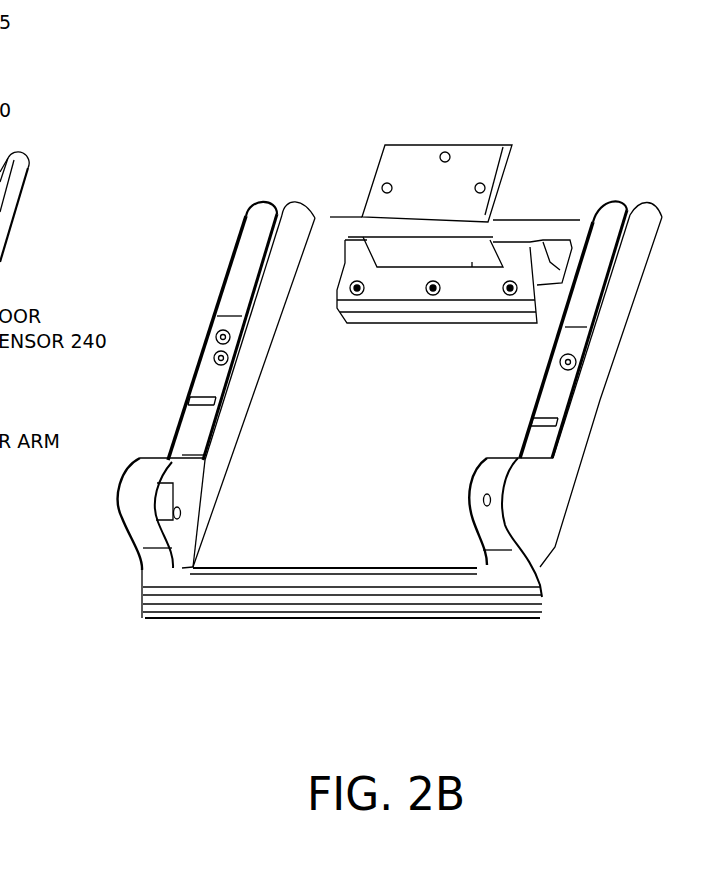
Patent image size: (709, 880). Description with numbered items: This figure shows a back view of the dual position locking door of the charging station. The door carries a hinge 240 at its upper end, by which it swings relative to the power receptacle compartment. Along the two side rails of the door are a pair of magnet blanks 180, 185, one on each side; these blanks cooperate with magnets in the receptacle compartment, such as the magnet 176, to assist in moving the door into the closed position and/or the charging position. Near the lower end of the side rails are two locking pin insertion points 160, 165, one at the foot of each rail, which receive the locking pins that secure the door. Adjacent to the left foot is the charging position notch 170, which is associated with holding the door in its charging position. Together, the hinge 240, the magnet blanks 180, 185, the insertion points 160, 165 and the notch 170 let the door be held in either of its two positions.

The hinge 240 is at (417, 150).
The magnet blank 185 is at (207, 337).
The magnet blank 180 is at (568, 342).
The locking pin insertion point 165 is at (178, 519).
The locking pin insertion point 160 is at (487, 506).
The charging position notch 170 is at (163, 483).
The magnet 176 is at (46, 401).